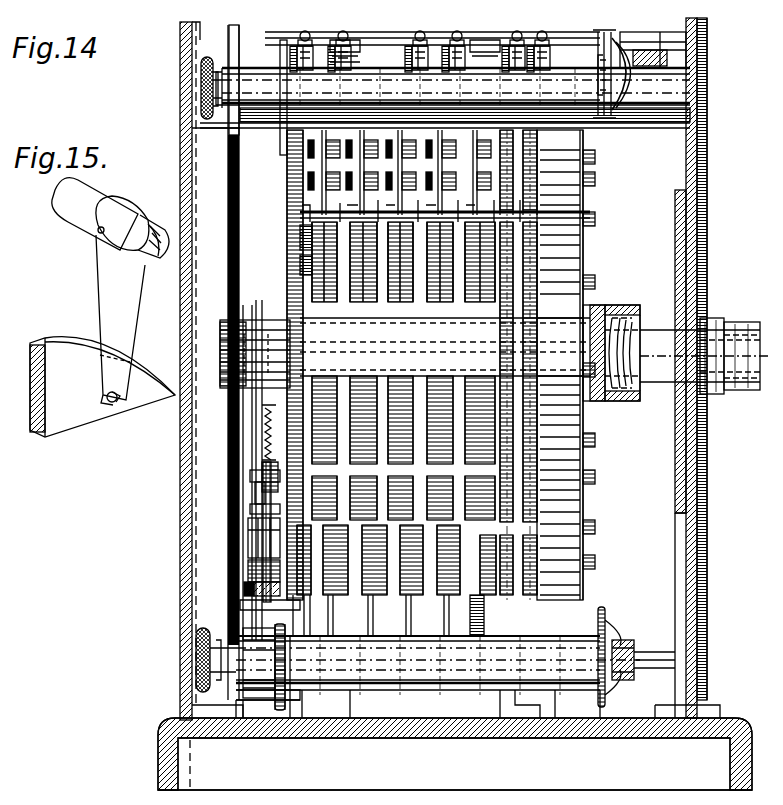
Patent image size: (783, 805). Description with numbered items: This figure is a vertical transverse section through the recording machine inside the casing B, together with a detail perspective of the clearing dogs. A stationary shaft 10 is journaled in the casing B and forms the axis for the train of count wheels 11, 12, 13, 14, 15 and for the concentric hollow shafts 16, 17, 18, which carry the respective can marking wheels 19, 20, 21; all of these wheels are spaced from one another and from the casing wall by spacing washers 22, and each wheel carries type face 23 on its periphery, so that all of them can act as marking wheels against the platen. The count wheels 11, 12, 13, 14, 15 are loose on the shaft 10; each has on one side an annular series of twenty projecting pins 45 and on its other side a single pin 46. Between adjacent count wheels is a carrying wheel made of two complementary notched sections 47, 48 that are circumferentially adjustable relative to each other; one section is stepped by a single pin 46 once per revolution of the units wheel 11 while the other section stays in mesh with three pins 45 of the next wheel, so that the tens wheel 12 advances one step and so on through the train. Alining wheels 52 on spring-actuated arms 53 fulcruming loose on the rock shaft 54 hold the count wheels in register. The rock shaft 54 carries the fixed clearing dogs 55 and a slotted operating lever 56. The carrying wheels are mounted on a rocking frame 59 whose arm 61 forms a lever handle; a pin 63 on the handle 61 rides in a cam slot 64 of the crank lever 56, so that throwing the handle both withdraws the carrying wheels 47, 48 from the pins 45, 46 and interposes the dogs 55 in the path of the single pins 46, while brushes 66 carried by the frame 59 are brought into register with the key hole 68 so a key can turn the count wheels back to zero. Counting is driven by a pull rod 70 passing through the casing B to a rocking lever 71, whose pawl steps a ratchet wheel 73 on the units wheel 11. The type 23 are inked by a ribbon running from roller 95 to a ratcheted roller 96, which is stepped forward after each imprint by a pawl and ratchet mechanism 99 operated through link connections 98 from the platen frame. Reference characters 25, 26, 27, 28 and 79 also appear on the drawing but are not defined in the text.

In FIG. 14, the stationary shaft 10 is at (638, 352).
In FIG. 15, the units count wheel 11 is at (102, 387).
In FIG. 14, the units count wheel 11 is at (306, 590).
In FIG. 14, the tens count wheel 12 is at (344, 590).
In FIG. 14, the hundreds count wheel 13 is at (382, 590).
In FIG. 14, the thousands count wheel 14 is at (420, 590).
In FIG. 14, the ten-thousands count wheel 15 is at (456, 590).
In FIG. 14, the concentric hollow shaft 16 is at (634, 308).
In FIG. 14, the concentric hollow shaft 17 is at (620, 399).
In FIG. 14, the concentric hollow shaft 18 is at (606, 308).
In FIG. 14, the can marking wheel 19 is at (556, 592).
In FIG. 14, the can marking wheel 20 is at (526, 592).
In FIG. 14, the can marking wheel 21 is at (494, 592).
In FIG. 14, the spacing washers 22 is at (480, 305).
In FIG. 14, the type face 23 is at (572, 208).
In FIG. 14, the transfer bar 25 is at (300, 212).
In FIG. 14, the gear 26 is at (325, 371).
In FIG. 14, the gear 27 is at (403, 371).
In FIG. 14, the gear 28 is at (365, 371).
In FIG. 14, the projecting pins 45 is at (290, 175).
In FIG. 15, the single pin 46 is at (108, 398).
In FIG. 14, the single pin 46 is at (300, 236).
In FIG. 14, the carrying wheel section 47 is at (300, 250).
In FIG. 14, the carrying wheel section 48 is at (300, 268).
In FIG. 14, the alining wheel 52 is at (420, 34).
In FIG. 14, the spring actuated arm 53 is at (488, 36).
In FIG. 15, the rock shaft 54 is at (110, 218).
In FIG. 15, the clearing dogs 55 is at (120, 320).
In FIG. 14, the clearing dogs 55 is at (312, 148).
In FIG. 14, the slotted operating lever 56 is at (392, 160).
In FIG. 14, the rocking frame 59 is at (238, 606).
In FIG. 14, the lever handle 61 is at (500, 36).
In FIG. 14, the pin 63 is at (343, 36).
In FIG. 14, the cam slot 64 is at (650, 44).
In FIG. 14, the brushes 66 is at (400, 684).
In FIG. 14, the key hole 68 is at (182, 608).
In FIG. 14, the pull rod 70 is at (250, 548).
In FIG. 14, the rocking lever 71 is at (290, 490).
In FIG. 14, the ratchet wheel 73 is at (290, 410).
In FIG. 14, the hub 79 is at (292, 616).
In FIG. 14, the ribbon roller 95 is at (445, 98).
In FIG. 14, the ratcheted roller 96 is at (455, 662).
In FIG. 14, the link connections 98 is at (245, 590).
In FIG. 14, the pawl and ratchet mechanism 99 is at (264, 661).
In FIG. 14, the casing B is at (180, 88).